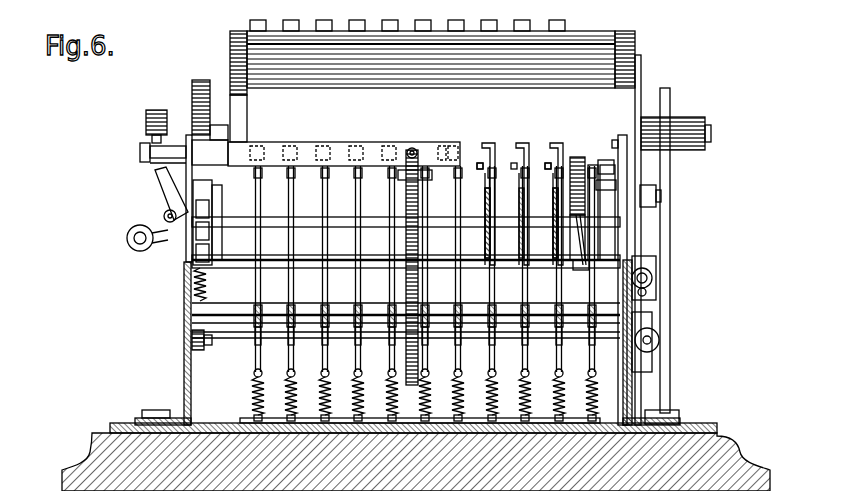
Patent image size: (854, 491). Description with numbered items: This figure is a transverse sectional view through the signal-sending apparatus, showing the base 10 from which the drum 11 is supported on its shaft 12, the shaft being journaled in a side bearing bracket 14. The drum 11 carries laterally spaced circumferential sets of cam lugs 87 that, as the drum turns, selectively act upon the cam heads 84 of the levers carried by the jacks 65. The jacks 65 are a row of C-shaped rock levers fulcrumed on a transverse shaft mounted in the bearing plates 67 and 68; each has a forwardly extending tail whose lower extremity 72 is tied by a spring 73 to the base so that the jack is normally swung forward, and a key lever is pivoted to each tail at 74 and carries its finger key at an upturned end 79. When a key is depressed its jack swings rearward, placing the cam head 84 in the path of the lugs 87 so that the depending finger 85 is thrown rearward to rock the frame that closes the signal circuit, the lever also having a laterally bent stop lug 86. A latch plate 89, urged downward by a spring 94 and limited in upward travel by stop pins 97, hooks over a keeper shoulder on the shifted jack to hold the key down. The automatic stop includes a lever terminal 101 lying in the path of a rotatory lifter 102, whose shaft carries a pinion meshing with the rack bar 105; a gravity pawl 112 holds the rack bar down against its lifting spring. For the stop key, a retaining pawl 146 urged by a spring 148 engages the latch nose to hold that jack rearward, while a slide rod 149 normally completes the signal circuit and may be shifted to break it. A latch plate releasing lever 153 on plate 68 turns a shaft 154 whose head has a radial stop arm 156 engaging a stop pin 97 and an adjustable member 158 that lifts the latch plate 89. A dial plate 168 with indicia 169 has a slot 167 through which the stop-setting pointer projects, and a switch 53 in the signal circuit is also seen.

The base 10 is at (735, 436).
The drum 11 is at (575, 178).
The shaft 12 is at (712, 134).
The side bearing bracket 14 is at (671, 215).
The switch 53 is at (653, 279).
The jack 65 is at (288, 250).
The bearing plate 67 is at (183, 353).
The bearing plate 68 is at (633, 387).
The lower extremity of tail 72 is at (360, 356).
The spring 73 is at (252, 395).
The pivot connection 74 is at (292, 332).
The upturned end of key lever 79 is at (355, 312).
The cam head 84 is at (520, 142).
The depending finger 85 is at (492, 212).
The stop lug 86 is at (480, 168).
The cam lugs 87 is at (268, 27).
The latch plate 89 is at (276, 142).
The spring 94 is at (404, 198).
The stop pins 97 is at (199, 146).
The lever terminal 101 is at (140, 154).
The rotatory lifter 102 is at (157, 110).
The rack bar 105 is at (203, 80).
The gravity pawl 112 is at (160, 194).
The retaining pawl 146 is at (575, 157).
The spring 148 is at (580, 222).
The slide rod 149 is at (660, 340).
The latch plate releasing lever 153 is at (636, 58).
The shaft 154 is at (661, 195).
The radial stop arm 156 is at (623, 135).
The adjustable member 158 is at (606, 158).
The slot 167 is at (222, 252).
The dial plate 168 is at (186, 270).
The indicia 169 is at (190, 229).